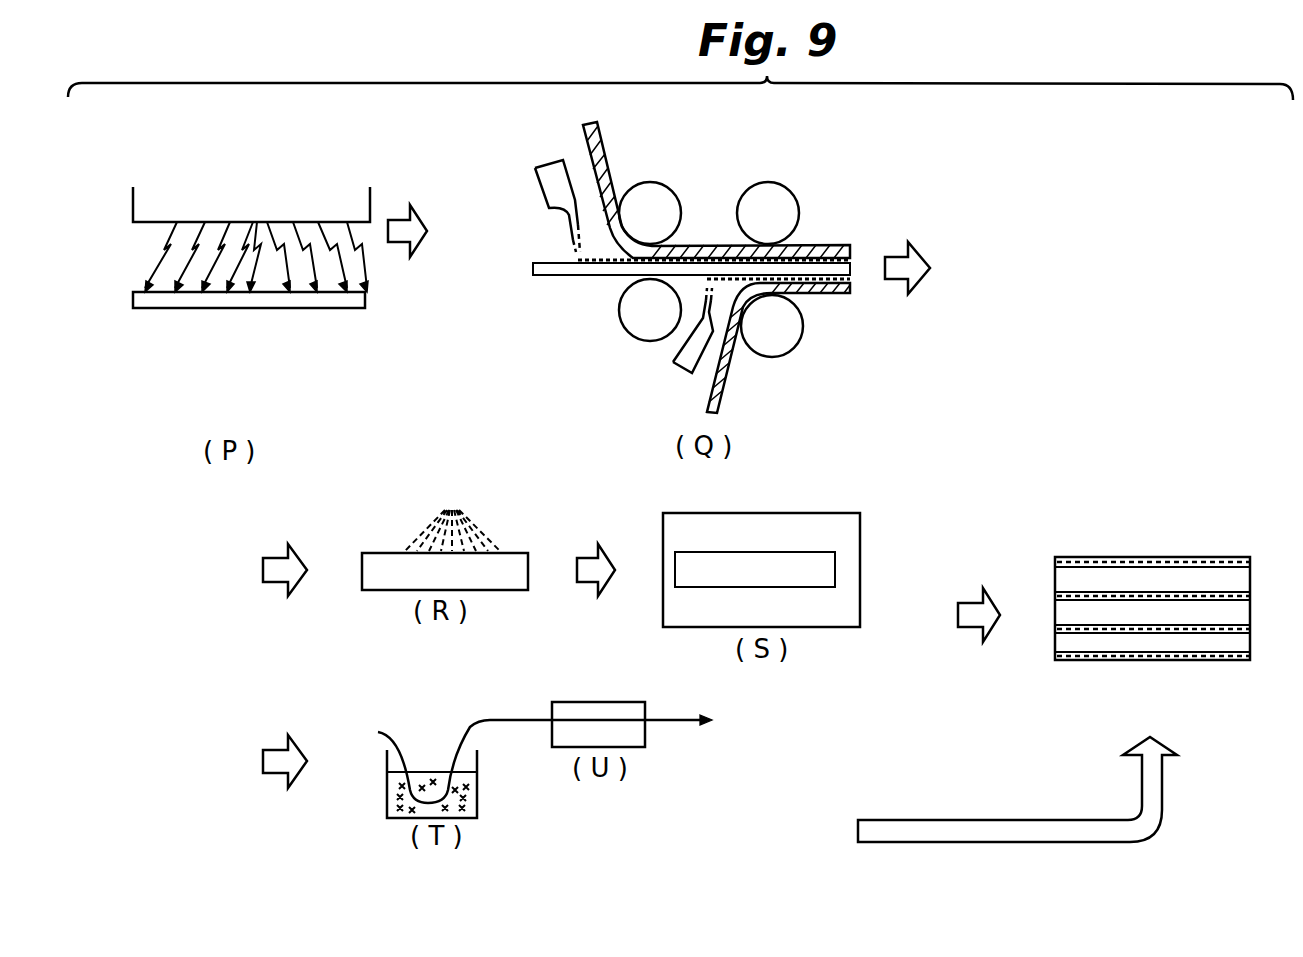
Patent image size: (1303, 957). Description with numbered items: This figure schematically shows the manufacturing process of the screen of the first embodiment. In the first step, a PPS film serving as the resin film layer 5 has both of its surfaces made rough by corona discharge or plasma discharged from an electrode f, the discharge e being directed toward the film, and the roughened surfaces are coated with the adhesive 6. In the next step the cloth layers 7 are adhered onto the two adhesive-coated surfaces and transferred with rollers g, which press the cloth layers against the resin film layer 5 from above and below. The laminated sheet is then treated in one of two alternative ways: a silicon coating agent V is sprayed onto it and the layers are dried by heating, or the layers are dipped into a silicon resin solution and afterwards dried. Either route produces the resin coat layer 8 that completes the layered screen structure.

The resin film layer 5 is at (366, 300).
The adhesive 6 is at (574, 257).
The cloth layers 7 is at (600, 138).
The resin coat layer 8 is at (1143, 661).
The electrode f is at (134, 204).
The irradiation rays e is at (234, 257).
The rollers g is at (665, 186).
The spray V is at (445, 535).